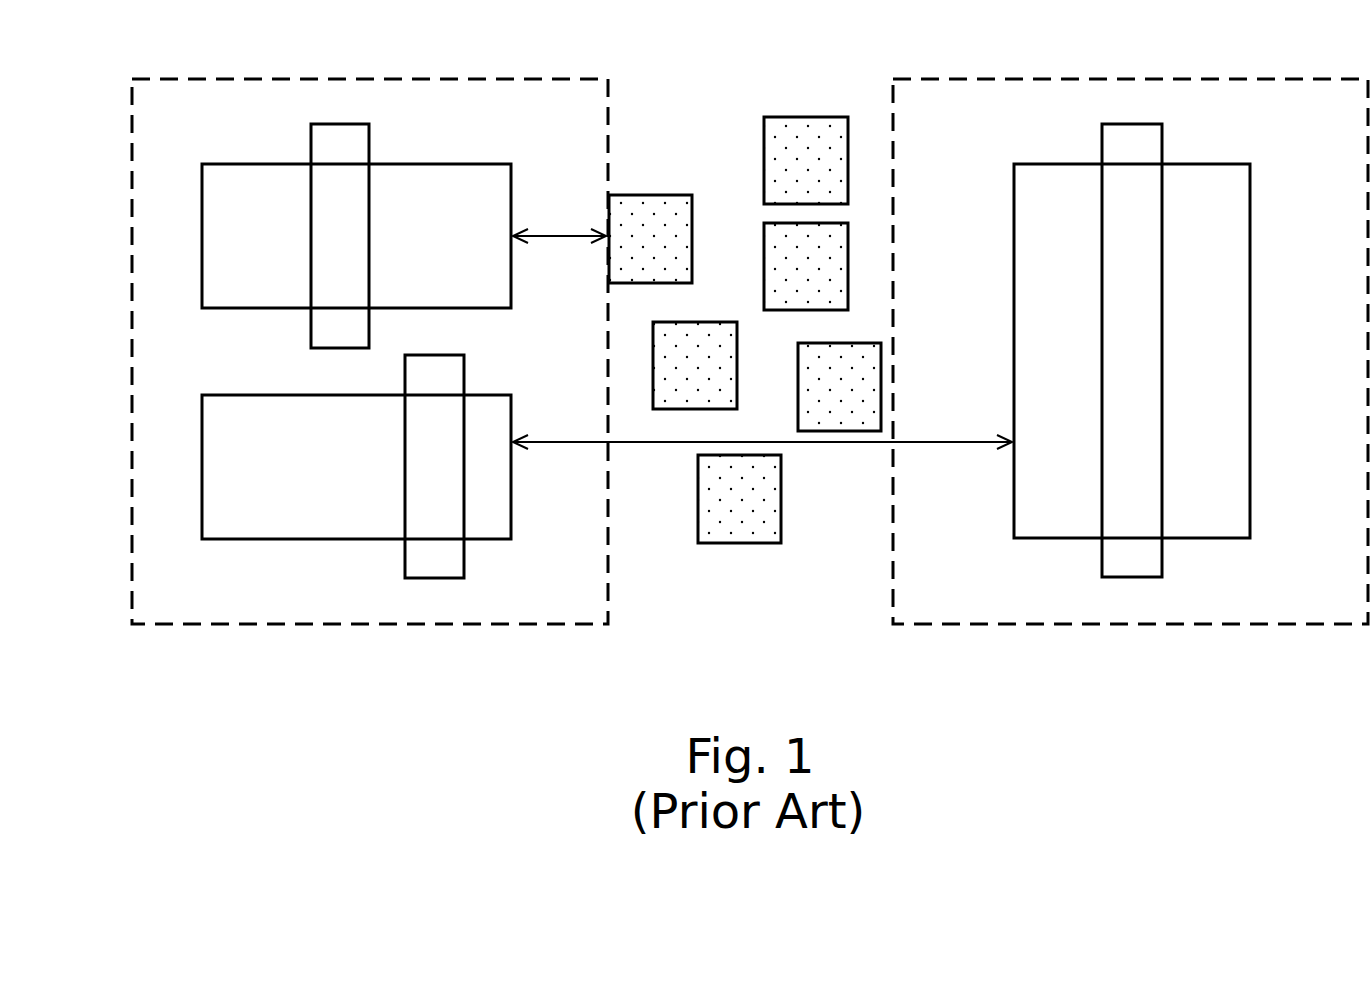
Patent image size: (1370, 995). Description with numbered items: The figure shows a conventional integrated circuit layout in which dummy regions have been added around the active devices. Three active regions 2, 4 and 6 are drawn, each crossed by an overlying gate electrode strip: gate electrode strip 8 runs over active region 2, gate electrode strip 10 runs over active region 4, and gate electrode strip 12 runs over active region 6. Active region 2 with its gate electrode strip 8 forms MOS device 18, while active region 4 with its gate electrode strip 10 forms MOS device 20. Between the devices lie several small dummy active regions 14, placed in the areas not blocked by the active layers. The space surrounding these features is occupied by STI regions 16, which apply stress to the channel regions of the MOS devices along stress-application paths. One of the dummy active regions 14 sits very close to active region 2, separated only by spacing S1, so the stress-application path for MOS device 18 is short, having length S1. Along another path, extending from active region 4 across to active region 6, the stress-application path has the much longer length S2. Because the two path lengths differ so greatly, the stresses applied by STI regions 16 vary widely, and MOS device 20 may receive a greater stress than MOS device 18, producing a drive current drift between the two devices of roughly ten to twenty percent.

The active region 2 is at (425, 245).
The active region 4 is at (477, 483).
The active region 6 is at (1052, 357).
The gate electrode strip 8 is at (342, 145).
The gate electrode strip 10 is at (450, 375).
The gate electrode strip 12 is at (1130, 147).
The dummy active regions 14 is at (811, 128).
The STI regions 16 is at (695, 157).
The MOS device 18 is at (383, 145).
The MOS device 20 is at (343, 607).
The spacing S1 is at (559, 220).
The length S2 is at (762, 428).